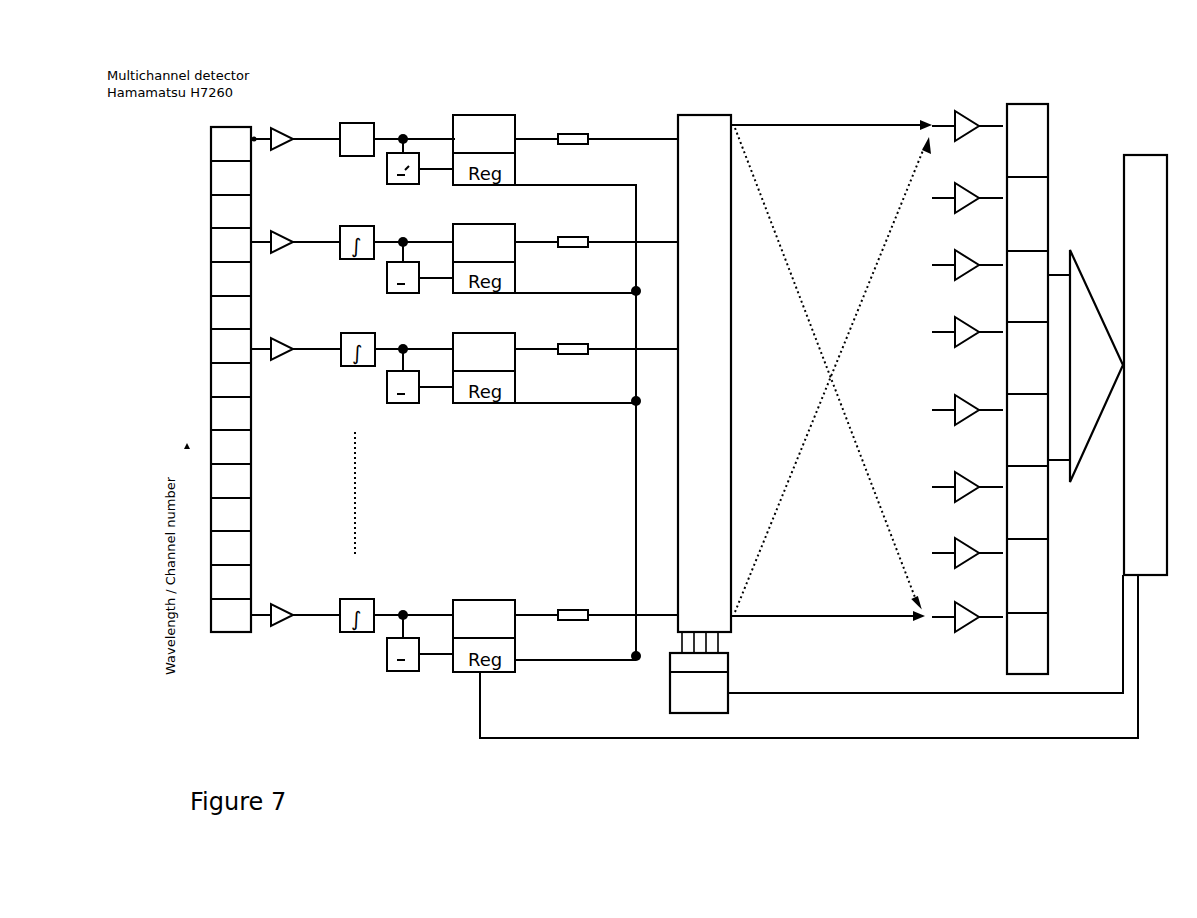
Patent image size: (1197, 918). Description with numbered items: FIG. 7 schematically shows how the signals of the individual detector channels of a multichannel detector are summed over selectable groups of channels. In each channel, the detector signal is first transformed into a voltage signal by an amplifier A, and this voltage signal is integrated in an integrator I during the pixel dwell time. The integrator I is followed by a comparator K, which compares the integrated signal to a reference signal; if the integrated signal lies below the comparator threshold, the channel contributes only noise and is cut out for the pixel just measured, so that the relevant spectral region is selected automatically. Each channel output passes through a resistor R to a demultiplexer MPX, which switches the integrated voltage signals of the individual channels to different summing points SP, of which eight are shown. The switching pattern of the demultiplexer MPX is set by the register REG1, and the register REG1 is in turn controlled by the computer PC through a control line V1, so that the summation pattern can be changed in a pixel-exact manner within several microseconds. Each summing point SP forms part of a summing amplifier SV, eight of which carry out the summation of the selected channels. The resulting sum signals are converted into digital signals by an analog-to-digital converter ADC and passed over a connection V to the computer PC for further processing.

The amplifier A is at (286, 149).
The integrator I is at (357, 130).
The comparator K is at (420, 173).
The resistor R is at (573, 129).
The demultiplexer MPX is at (704, 373).
The register REG1 is at (699, 683).
The summing amplifier SV is at (965, 351).
The summing point SP is at (965, 123).
The analog-to-digital converter ADC is at (1027, 389).
The computer PC is at (1145, 350).
The control line V1 is at (925, 634).
The connection V is at (825, 656).